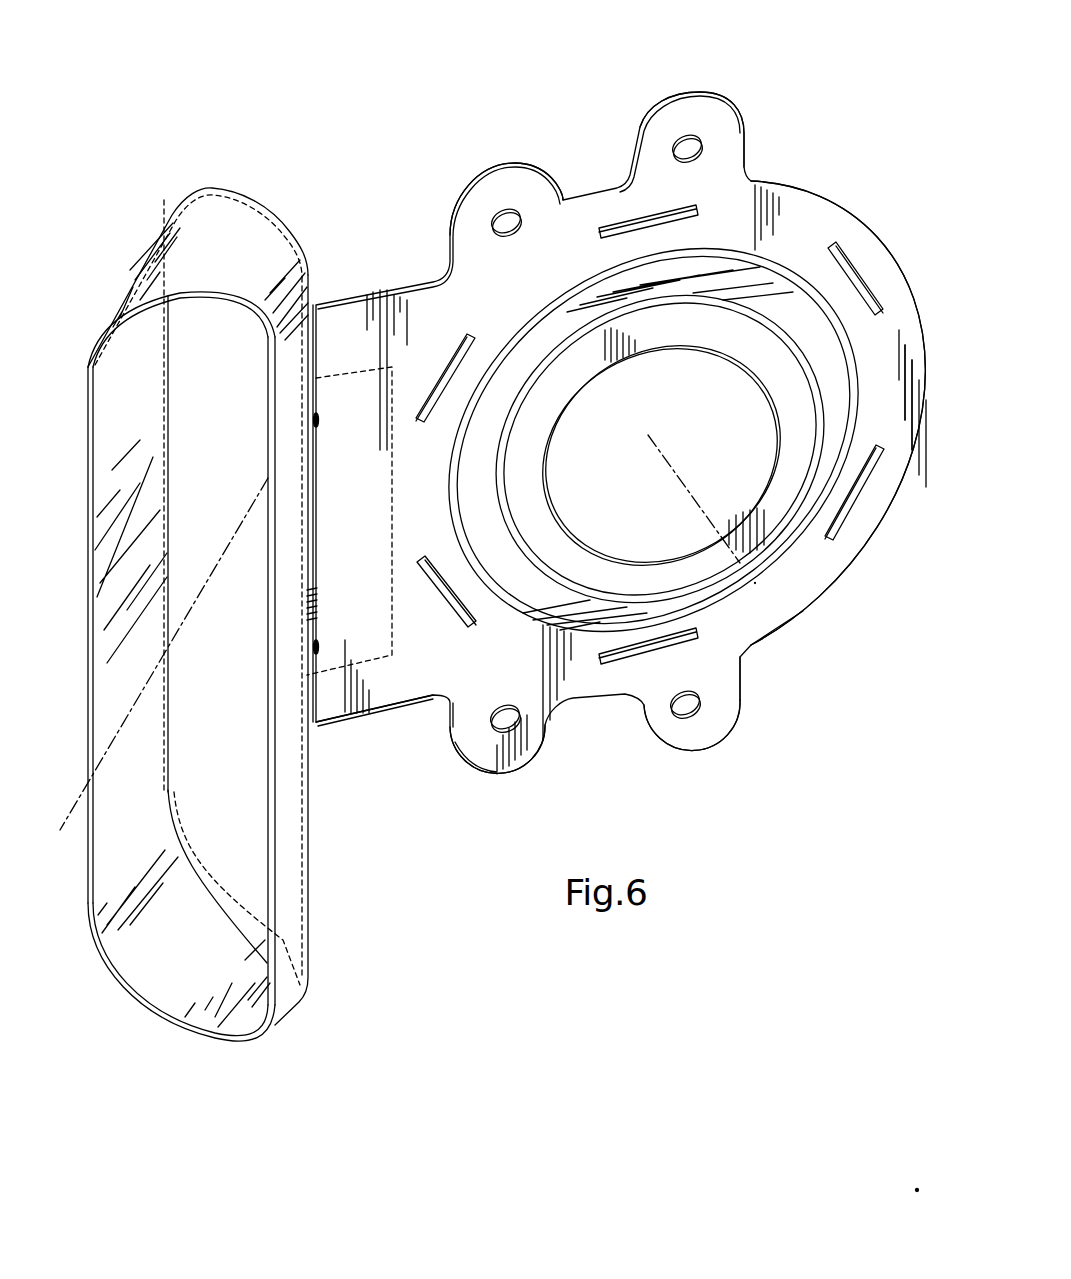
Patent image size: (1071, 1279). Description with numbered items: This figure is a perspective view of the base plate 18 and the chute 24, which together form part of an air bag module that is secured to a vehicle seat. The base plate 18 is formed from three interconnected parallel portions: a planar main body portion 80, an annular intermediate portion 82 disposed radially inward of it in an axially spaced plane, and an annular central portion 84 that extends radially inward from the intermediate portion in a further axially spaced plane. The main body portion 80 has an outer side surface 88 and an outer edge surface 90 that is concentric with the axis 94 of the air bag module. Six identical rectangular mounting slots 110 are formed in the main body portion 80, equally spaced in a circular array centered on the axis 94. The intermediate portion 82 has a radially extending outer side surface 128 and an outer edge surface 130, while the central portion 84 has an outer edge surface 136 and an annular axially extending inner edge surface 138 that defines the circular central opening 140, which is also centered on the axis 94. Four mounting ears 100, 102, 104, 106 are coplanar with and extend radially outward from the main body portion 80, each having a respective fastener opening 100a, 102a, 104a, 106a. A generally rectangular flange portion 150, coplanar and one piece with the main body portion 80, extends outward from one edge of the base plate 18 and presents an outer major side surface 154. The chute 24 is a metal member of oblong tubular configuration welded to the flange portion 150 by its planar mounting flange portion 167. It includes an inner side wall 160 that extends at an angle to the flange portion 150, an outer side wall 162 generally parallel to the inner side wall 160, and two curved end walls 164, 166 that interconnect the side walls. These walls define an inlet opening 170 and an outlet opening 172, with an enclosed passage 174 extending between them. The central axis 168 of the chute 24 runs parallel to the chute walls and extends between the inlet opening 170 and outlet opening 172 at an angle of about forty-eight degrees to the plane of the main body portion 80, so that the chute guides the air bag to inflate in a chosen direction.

The base plate 18 is at (800, 72).
The chute 24 is at (113, 207).
The main body portion 80 is at (759, 652).
The intermediate portion 82 is at (766, 602).
The central portion 84 is at (760, 585).
The outer side surface 88 is at (820, 558).
The outer edge surface 90 is at (787, 187).
The axis 94 is at (665, 453).
The mounting ear 100 is at (492, 770).
The fastener opening 100a is at (517, 728).
The mounting ear 102 is at (712, 93).
The fastener opening 102a is at (687, 133).
The mounting ear 104 is at (497, 172).
The fastener opening 104a is at (507, 210).
The mounting ear 106 is at (718, 737).
The fastener opening 106a is at (687, 717).
The mounting slots 110 is at (600, 231).
The outer side surface 128 is at (833, 398).
The outer edge surface 130 is at (573, 292).
The outer edge surface 136 is at (570, 343).
The inner edge surface 138 is at (740, 507).
The central opening 140 is at (662, 454).
The flange portion 150 is at (383, 716).
The outer major side surface 154 is at (330, 700).
The inner side wall 160 is at (290, 888).
The outer side wall 162 is at (85, 643).
The curved end wall 164 is at (238, 235).
The curved end wall 166 is at (212, 1007).
The mounting flange portion 167 is at (347, 373).
The central axis 168 is at (215, 566).
The inlet opening 170 is at (170, 760).
The outlet opening 172 is at (103, 960).
The passage 174 is at (219, 602).